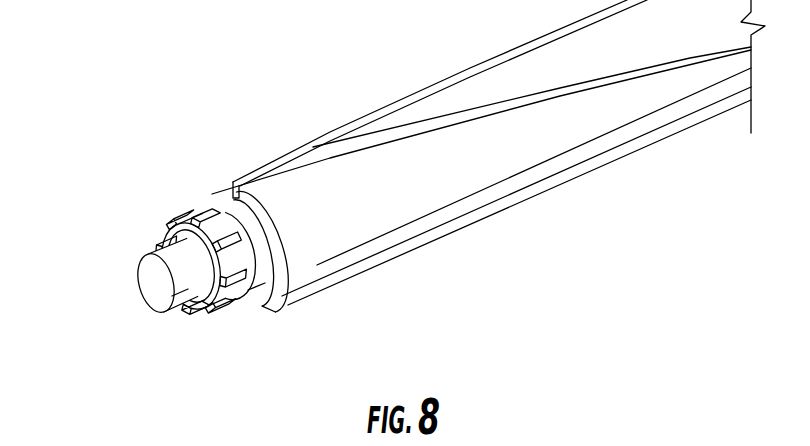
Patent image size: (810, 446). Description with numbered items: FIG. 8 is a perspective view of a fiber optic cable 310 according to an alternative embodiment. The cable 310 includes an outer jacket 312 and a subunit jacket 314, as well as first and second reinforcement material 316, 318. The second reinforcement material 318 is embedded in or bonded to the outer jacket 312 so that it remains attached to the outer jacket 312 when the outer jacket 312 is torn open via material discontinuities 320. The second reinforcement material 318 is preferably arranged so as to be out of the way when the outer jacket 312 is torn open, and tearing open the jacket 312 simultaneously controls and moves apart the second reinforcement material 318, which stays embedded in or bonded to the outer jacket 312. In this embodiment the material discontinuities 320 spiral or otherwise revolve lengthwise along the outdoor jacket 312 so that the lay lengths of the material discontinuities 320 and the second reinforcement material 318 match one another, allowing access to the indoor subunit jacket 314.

The cable 310 is at (404, 203).
The outer jacket 312 is at (388, 222).
The subunit jacket 314 is at (213, 292).
The first reinforcement material 316 is at (157, 303).
The second reinforcement material 318 is at (202, 232).
The material discontinuities 320 is at (309, 157).